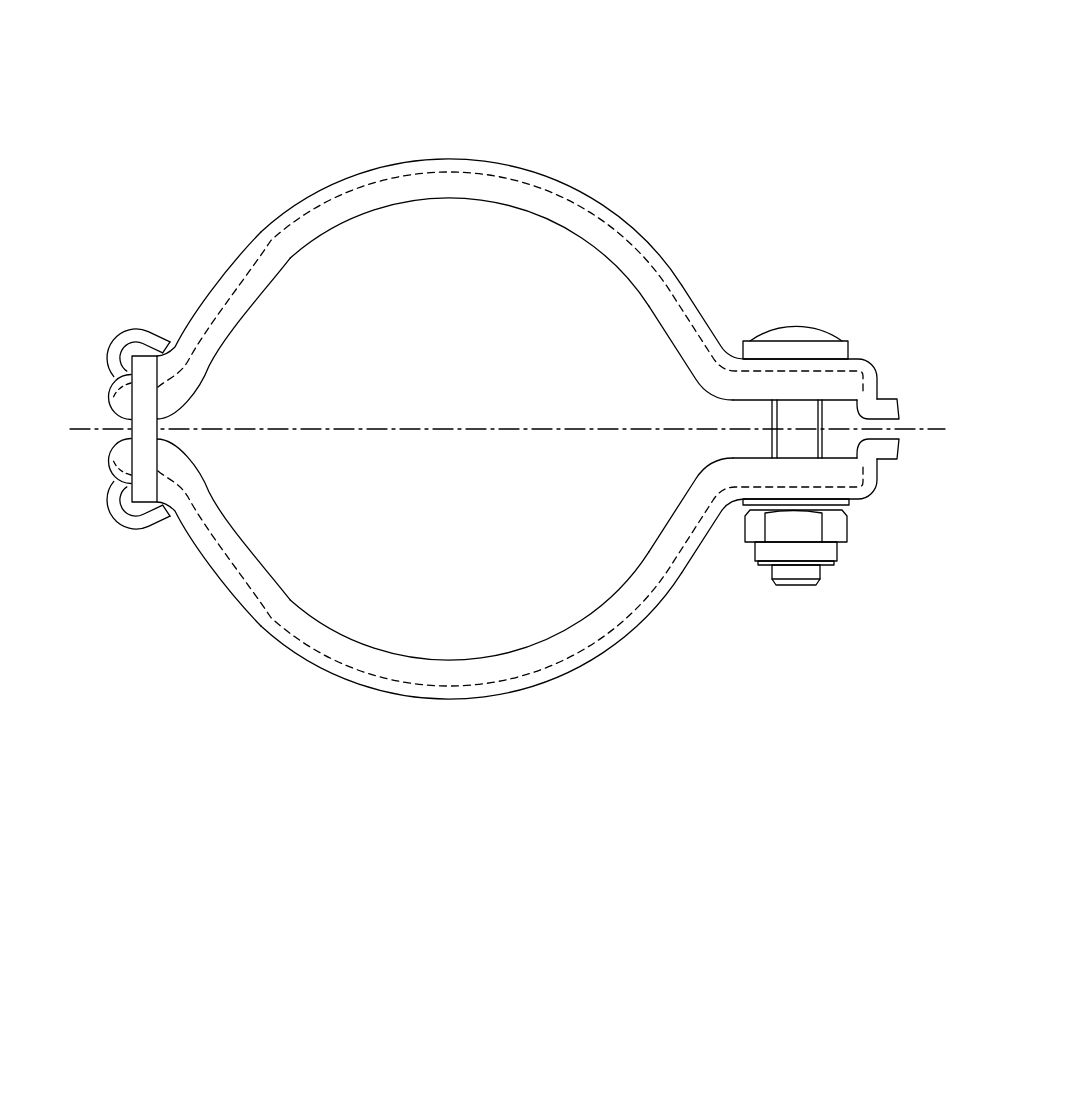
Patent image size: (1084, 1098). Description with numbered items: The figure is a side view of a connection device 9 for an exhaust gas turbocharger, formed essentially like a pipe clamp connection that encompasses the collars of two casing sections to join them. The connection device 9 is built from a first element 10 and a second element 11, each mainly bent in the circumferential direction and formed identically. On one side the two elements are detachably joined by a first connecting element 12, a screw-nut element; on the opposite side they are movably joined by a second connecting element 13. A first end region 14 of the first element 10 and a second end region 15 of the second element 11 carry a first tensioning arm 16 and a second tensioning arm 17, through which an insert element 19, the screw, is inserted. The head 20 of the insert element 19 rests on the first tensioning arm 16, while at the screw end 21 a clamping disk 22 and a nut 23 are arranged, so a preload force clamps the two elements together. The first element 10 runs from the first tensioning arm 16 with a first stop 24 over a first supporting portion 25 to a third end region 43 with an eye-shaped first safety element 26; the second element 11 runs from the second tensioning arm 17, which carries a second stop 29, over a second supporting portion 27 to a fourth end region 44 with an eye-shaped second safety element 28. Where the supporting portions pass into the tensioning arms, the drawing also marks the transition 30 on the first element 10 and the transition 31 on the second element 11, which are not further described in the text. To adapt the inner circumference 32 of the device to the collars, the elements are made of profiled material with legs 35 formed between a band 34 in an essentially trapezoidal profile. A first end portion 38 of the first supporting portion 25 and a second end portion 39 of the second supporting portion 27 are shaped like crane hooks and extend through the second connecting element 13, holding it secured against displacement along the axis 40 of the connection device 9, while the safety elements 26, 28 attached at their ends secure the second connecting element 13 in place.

The connection device 9 is at (765, 152).
The first element 10 is at (448, 150).
The second element 11 is at (447, 715).
The first connecting element 12 is at (798, 315).
The second connecting element 13 is at (148, 406).
The first end region 14 is at (888, 332).
The second end region 15 is at (889, 517).
The first tensioning arm 16 is at (815, 380).
The second tensioning arm 17 is at (805, 480).
The insert element 19 is at (777, 440).
The head 20 is at (777, 334).
The screw end 21 is at (797, 590).
The clamping disk 22 is at (846, 506).
The nut 23 is at (785, 538).
The first stop 24 is at (900, 405).
The first supporting portion 25 is at (517, 190).
The first safety element 26 is at (140, 331).
The second supporting portion 27 is at (488, 672).
The second safety element 28 is at (140, 531).
The second stop 29 is at (900, 447).
The upper bend 30 is at (728, 358).
The lower bend 31 is at (729, 501).
The inner circumference 32 is at (432, 176).
The band 34 is at (313, 197).
The legs 35 is at (316, 241).
The first end portion 38 is at (115, 400).
The second end portion 39 is at (116, 461).
The axis 40 is at (498, 425).
The third end region 43 is at (97, 312).
The fourth end region 44 is at (99, 549).